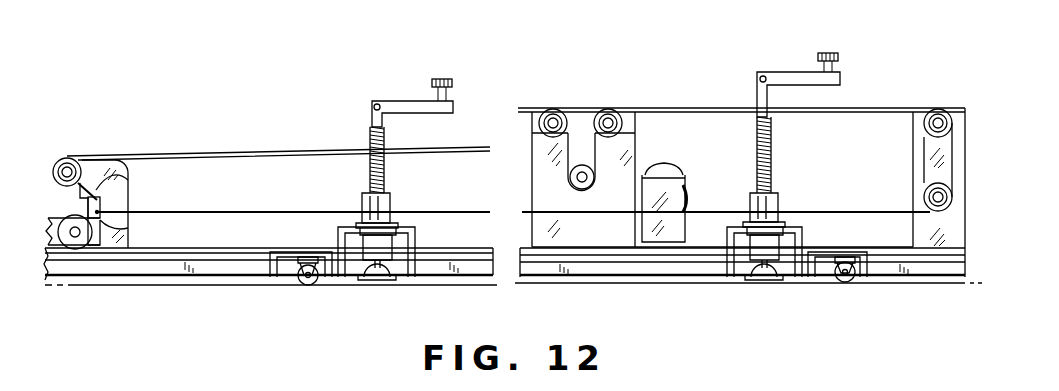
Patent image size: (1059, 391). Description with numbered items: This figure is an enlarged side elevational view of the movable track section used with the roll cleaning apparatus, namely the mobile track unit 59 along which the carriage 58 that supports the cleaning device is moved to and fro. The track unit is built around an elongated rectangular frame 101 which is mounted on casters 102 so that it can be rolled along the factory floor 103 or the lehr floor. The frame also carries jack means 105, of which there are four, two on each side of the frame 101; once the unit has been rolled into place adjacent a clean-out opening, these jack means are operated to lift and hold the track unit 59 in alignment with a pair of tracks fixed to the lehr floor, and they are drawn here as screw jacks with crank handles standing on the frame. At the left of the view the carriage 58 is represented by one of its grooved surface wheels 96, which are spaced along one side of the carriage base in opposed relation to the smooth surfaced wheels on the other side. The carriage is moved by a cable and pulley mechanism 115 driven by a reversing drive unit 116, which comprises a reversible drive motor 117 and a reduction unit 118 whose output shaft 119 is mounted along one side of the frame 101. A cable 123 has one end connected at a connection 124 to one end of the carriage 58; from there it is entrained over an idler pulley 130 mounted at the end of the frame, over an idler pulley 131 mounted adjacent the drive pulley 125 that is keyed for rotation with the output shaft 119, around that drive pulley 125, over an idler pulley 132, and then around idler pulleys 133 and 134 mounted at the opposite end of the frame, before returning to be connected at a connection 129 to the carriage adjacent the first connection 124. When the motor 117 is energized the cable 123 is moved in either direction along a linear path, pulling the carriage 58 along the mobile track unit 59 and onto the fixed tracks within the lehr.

The carriage 58 is at (103, 233).
The mobile track unit 59 is at (587, 277).
The grooved surface wheels 96 is at (79, 243).
The elongated rectangular frame 101 is at (433, 268).
The casters 102 is at (303, 285).
The factory floor 103 is at (668, 280).
The jack means 105 is at (441, 78).
The cable and pulley mechanism 115 is at (666, 102).
The reversing drive unit 116 is at (586, 94).
The reversible drive motor 117 is at (662, 164).
The reduction unit 118 is at (678, 186).
The output shaft 119 is at (584, 182).
The cable 123 is at (487, 146).
The cable connection 124 is at (132, 177).
The drive pulley 125 is at (568, 179).
The cable connection 129 is at (102, 222).
The idler pulley 130 is at (63, 158).
The idler pulley 131 is at (553, 109).
The idler pulley 132 is at (611, 109).
The idler pulley 133 is at (938, 108).
The idler pulley 134 is at (924, 197).